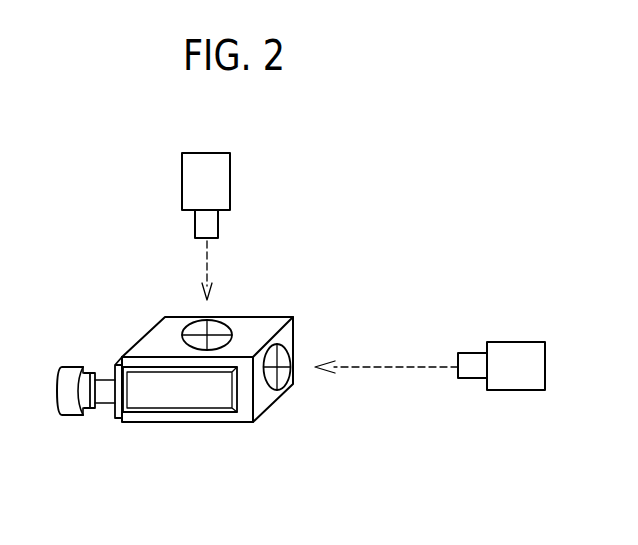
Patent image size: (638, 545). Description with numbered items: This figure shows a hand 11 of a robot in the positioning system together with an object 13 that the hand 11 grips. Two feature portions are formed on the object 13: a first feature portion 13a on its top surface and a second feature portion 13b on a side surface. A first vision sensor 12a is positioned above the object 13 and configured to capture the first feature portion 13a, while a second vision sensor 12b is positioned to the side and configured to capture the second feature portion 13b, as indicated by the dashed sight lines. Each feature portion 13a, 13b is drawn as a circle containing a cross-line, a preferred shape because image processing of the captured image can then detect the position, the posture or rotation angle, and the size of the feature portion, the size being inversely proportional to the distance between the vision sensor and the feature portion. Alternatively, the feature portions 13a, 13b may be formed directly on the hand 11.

The hand 11 is at (182, 395).
The first vision sensor 12a is at (181, 176).
The second vision sensor 12b is at (518, 392).
The object 13 is at (275, 402).
The first feature portion 13a is at (220, 323).
The second feature portion 13b is at (285, 343).